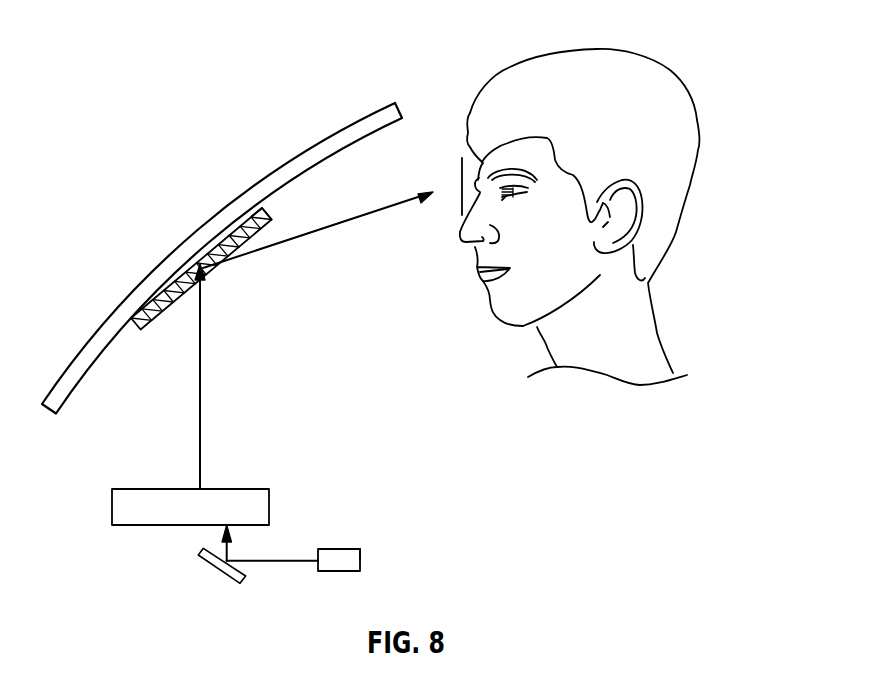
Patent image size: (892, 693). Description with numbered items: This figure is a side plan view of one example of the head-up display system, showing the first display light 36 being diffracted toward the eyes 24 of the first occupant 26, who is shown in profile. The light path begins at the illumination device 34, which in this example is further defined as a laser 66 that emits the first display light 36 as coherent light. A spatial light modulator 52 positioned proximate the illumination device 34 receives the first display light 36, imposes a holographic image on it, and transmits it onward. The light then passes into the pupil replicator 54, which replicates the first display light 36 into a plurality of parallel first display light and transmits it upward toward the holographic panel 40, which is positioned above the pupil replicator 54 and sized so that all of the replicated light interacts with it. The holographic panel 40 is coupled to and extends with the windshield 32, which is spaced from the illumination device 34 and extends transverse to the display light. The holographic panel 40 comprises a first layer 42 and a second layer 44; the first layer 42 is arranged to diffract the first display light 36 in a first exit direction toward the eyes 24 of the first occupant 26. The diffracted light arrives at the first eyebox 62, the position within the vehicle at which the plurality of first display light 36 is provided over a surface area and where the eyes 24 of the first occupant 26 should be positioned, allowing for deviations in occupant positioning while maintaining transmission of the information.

The eyes 24 is at (512, 193).
The first occupant 26 is at (614, 192).
The windshield 32 is at (322, 140).
The illumination device 34 is at (362, 563).
The first display light 36 is at (312, 232).
The holographic panel 40 is at (222, 247).
The first layer 42 is at (262, 208).
The second layer 44 is at (135, 326).
The spatial light modulator 52 is at (218, 570).
The pupil replicator 54 is at (138, 527).
The first eyebox 62 is at (458, 187).
The laser 66 is at (355, 549).